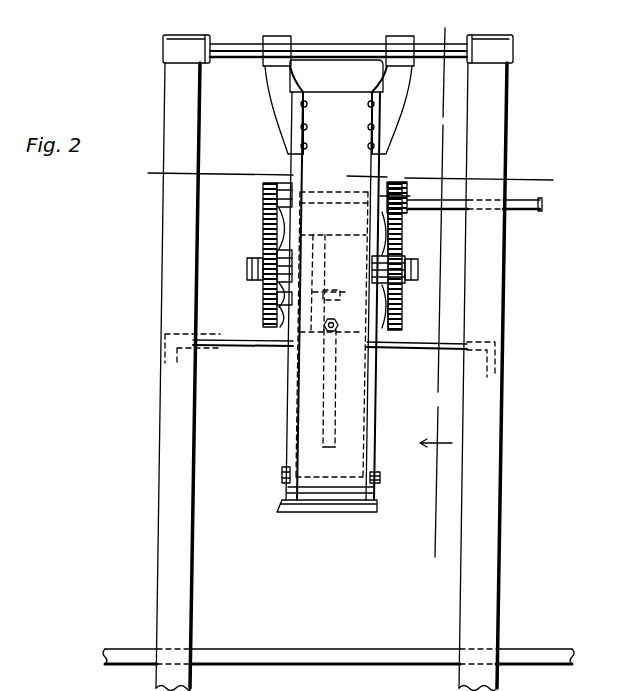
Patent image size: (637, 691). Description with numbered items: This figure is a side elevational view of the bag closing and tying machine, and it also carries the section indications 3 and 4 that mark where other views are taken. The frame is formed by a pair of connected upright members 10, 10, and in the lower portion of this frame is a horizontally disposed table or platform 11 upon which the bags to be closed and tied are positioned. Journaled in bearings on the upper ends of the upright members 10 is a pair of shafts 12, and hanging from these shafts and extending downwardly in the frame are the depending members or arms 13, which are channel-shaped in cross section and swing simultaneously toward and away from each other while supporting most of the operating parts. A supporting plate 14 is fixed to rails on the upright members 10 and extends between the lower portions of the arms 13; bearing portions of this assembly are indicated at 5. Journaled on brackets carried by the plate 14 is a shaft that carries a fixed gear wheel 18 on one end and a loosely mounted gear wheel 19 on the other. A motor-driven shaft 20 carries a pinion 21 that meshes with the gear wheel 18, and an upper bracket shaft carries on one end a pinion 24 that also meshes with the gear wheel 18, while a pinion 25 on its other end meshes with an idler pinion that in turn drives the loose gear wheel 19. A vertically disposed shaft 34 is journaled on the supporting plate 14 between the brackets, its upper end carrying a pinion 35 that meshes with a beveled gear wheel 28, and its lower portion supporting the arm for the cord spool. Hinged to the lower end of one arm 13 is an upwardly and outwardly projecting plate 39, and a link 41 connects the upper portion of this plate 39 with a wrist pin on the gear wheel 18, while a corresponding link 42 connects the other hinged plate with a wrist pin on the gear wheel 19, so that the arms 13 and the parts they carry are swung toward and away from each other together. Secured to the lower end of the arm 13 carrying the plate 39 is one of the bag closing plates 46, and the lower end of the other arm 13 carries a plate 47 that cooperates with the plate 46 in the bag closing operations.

The section line 3- 3 is at (342, 182).
The section line 4- 4 is at (455, 26).
The bearing plate 5 is at (233, 176).
The upright member 10 is at (165, 258).
The table or platform 11 is at (312, 652).
The shaft 12 is at (322, 46).
The depending member (arm) 13 is at (305, 121).
The supporting plate 14 is at (223, 346).
The gear wheel 18 is at (402, 236).
The gear wheel 19 is at (262, 240).
The shaft 20 is at (482, 230).
The pinion 21 is at (409, 194).
The pinion 24 is at (400, 180).
The pinion 25 is at (272, 182).
The beveled gear wheel 28 is at (317, 250).
The vertically disposed shaft 34 is at (328, 426).
The pinion 35 is at (340, 292).
The plate 39 is at (310, 386).
The link 41 is at (405, 281).
The link 42 is at (252, 279).
The bag closing plate 46 is at (280, 505).
The plate 47 is at (372, 513).